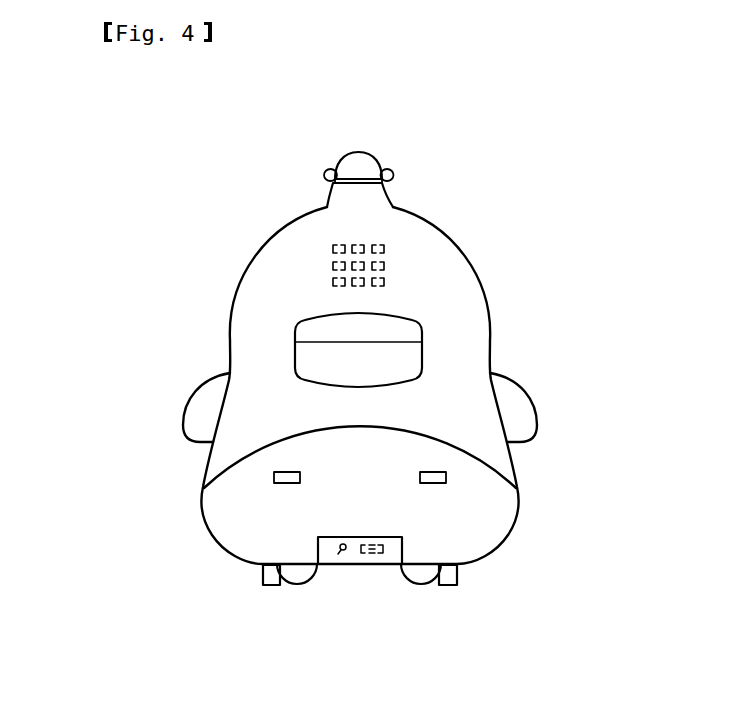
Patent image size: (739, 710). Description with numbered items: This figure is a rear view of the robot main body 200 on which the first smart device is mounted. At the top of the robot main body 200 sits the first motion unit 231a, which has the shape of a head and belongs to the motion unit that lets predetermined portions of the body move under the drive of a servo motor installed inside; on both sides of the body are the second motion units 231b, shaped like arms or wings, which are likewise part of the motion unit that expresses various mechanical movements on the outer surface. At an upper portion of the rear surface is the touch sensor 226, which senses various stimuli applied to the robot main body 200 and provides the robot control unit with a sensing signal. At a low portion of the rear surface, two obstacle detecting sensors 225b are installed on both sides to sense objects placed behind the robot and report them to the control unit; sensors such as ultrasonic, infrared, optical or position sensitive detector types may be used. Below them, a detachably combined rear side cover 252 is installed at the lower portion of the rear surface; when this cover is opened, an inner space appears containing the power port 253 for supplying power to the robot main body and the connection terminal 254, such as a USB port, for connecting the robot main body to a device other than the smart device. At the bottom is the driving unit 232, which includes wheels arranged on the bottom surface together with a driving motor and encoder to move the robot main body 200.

The robot main body 200 is at (434, 208).
The first motion unit 231a is at (358, 158).
The touch sensor 226 is at (385, 265).
The second motion unit 231b is at (518, 415).
The obstacle detecting sensors 225b is at (274, 476).
The rear side cover 252 is at (402, 546).
The power port 253 is at (343, 553).
The connection terminal 254 is at (372, 556).
The driving unit 232 is at (270, 596).